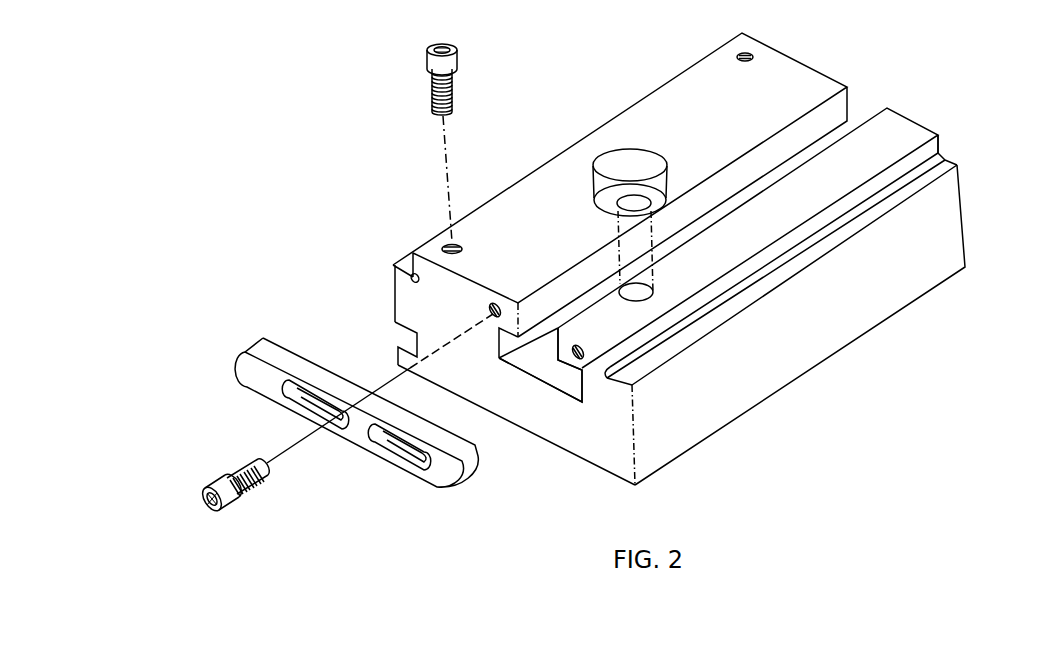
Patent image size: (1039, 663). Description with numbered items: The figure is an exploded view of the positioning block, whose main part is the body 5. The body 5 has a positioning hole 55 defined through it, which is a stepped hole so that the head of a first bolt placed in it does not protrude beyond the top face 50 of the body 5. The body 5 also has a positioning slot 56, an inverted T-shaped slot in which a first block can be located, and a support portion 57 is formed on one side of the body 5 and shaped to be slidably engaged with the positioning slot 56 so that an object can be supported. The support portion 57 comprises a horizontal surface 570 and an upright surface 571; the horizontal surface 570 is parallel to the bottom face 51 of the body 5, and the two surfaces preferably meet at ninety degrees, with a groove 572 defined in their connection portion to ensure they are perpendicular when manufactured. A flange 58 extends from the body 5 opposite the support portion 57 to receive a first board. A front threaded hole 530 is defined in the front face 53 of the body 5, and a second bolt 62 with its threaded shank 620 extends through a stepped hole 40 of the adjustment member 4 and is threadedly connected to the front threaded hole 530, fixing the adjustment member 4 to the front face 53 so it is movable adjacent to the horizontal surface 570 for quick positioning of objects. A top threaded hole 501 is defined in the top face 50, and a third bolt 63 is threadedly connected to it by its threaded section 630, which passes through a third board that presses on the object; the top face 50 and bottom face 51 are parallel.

The adjustment member 4 is at (262, 347).
The stepped hole 40 is at (291, 398).
The body 5 is at (498, 179).
The top face 50 is at (535, 193).
The top threaded hole 501 is at (449, 243).
The bottom face 51 is at (726, 430).
The front face 53 is at (612, 453).
The front threaded hole 530 is at (575, 360).
The positioning hole 55 is at (624, 160).
The positioning slot 56 is at (861, 109).
The support portion 57 is at (950, 79).
The horizontal surface 570 is at (396, 260).
The upright surface 571 is at (936, 146).
The groove 572 is at (410, 278).
The flange 58 is at (400, 337).
The second bolt 62 is at (211, 485).
The threaded shank 620 is at (250, 461).
The third bolt 63 is at (428, 63).
The threaded section 630 is at (431, 99).